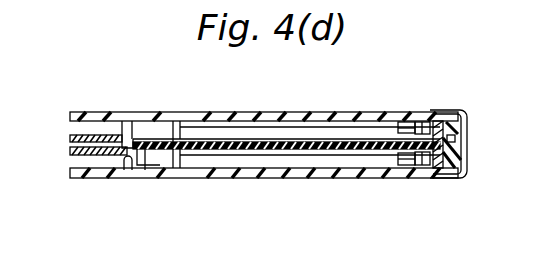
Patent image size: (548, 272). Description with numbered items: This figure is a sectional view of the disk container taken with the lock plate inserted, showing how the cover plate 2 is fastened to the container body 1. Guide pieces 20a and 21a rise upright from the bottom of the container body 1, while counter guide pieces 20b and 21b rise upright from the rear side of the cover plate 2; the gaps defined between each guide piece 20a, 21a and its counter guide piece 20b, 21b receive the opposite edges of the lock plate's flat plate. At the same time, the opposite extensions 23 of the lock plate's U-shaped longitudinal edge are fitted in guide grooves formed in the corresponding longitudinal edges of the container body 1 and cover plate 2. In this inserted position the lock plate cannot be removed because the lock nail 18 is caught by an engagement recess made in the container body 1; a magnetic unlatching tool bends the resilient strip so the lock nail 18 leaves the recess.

The container body 1 is at (92, 179).
The cover plate 2 is at (126, 112).
The lock nail 18 is at (420, 122).
The guide piece 20a is at (181, 162).
The counter guide piece 20b is at (180, 127).
The guide piece 21a is at (398, 160).
The counter guide piece 21b is at (403, 124).
The extension 23 is at (445, 120).